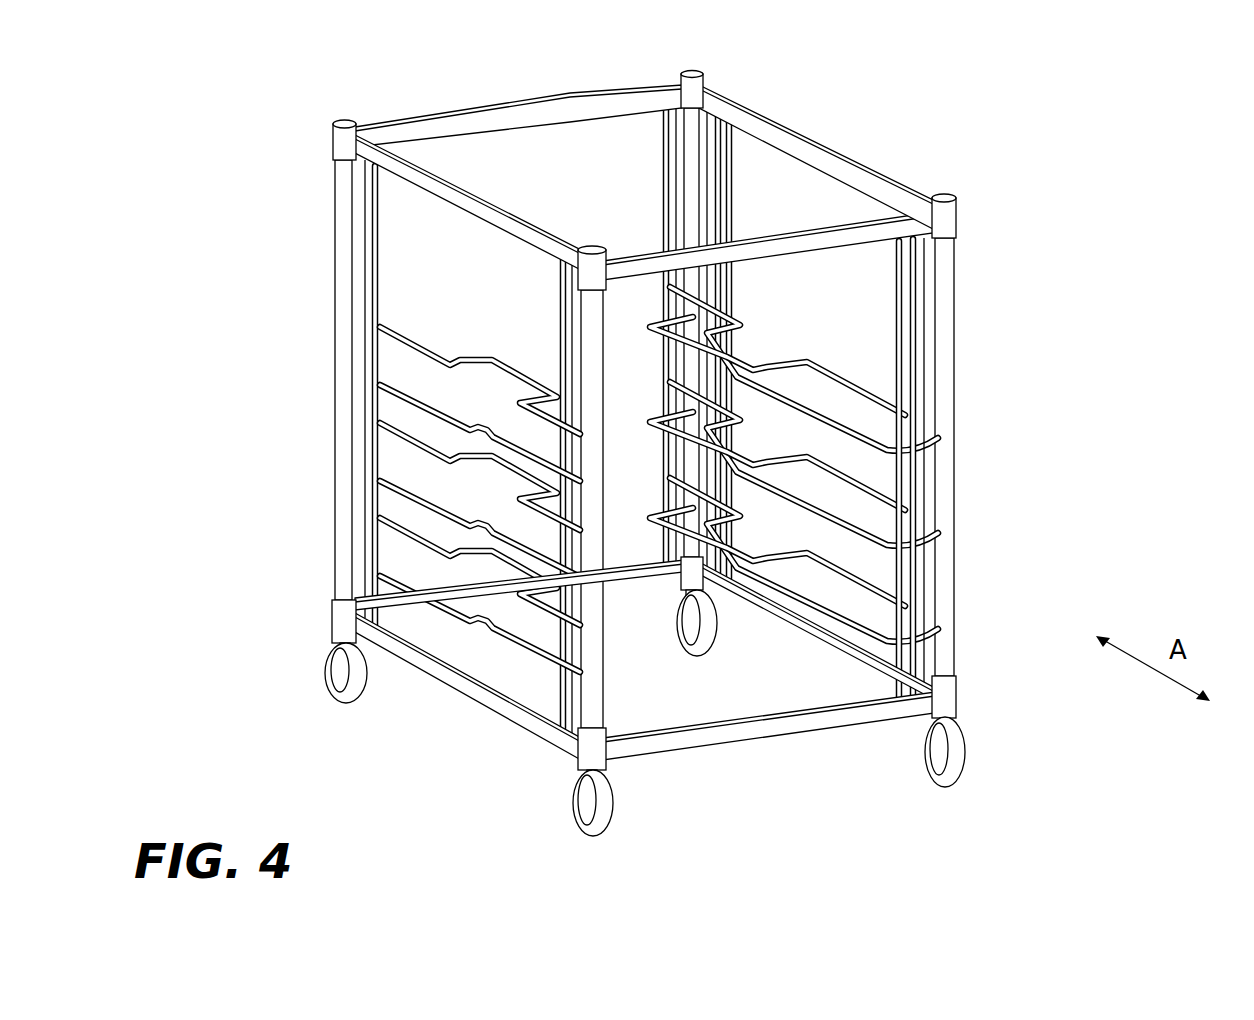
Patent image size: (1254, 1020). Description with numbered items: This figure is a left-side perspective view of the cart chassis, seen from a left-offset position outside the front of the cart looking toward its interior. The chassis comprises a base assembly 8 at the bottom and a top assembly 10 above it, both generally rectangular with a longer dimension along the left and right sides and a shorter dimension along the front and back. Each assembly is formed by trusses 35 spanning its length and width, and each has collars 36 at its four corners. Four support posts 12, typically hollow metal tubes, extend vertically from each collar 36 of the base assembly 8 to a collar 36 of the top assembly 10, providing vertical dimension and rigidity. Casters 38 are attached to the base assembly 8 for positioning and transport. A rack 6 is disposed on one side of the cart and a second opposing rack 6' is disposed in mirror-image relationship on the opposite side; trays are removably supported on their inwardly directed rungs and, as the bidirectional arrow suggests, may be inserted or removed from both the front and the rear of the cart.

The rack 6 is at (831, 402).
The second opposing rack 6' is at (520, 418).
The base assembly 8 is at (762, 746).
The top assembly 10 is at (843, 152).
The support post 12 is at (690, 170).
The truss 35 is at (570, 95).
The collar 36 is at (344, 124).
The caster 38 is at (345, 704).